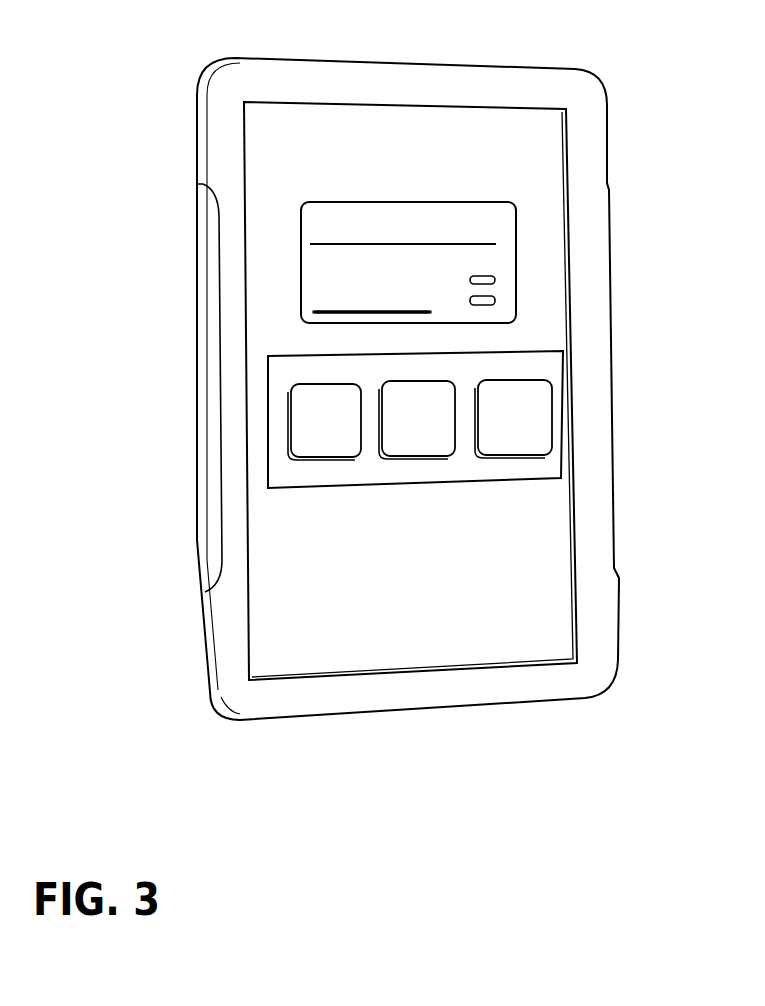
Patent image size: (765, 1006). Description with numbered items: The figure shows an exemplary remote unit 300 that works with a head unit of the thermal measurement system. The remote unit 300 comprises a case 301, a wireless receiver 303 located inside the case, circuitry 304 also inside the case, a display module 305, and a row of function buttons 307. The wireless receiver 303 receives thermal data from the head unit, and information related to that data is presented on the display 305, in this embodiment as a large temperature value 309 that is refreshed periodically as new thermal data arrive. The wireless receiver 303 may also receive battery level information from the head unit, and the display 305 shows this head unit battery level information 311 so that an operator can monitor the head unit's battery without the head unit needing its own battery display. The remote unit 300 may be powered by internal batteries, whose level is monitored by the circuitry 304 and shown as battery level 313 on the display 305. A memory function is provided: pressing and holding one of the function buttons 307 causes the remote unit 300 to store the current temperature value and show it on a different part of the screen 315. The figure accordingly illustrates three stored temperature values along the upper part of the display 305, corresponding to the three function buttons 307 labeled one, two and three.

The remote unit 300 is at (516, 685).
The case 301 is at (228, 119).
The wireless receiver 303 is at (609, 168).
The circuitry 304 is at (410, 391).
The display module 305 is at (300, 228).
The function buttons 307 is at (338, 313).
The temperature value 309 is at (318, 280).
The head unit battery level information 311 is at (495, 300).
The battery level 313 is at (492, 280).
The different part of the screen 315 is at (328, 218).